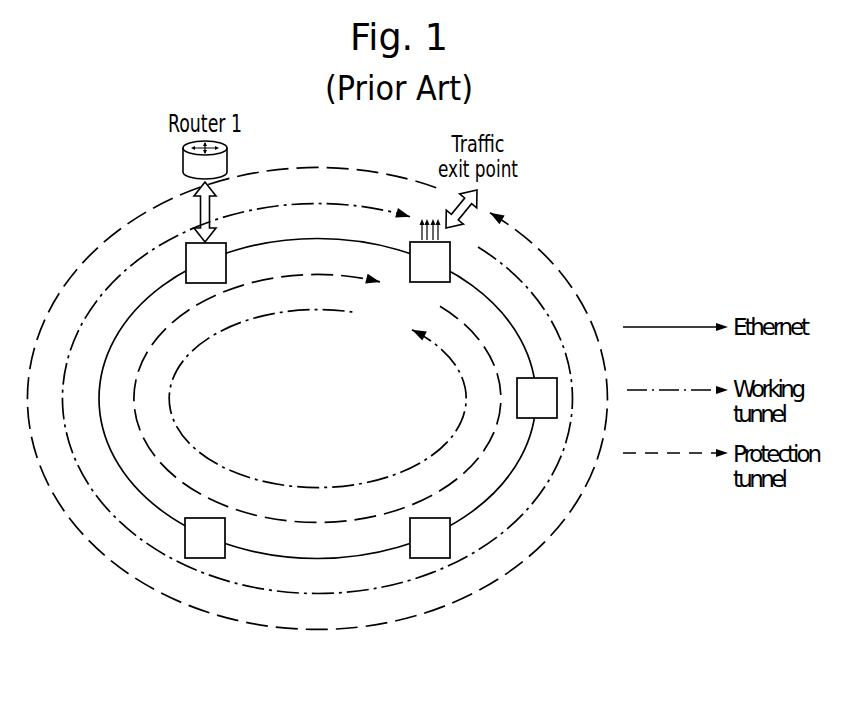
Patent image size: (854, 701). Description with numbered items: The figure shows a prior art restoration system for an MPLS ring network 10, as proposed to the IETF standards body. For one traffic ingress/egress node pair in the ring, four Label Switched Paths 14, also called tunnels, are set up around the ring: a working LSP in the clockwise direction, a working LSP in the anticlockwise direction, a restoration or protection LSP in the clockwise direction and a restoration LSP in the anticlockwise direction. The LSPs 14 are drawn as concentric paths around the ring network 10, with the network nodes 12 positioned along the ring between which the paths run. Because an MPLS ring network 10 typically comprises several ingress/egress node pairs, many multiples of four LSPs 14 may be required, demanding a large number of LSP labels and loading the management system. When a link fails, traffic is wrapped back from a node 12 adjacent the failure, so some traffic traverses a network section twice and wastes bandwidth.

The MPLS ring network 10 is at (344, 396).
The network node 12 is at (186, 263).
The Label Switched Paths (LSPs) 14 is at (510, 267).